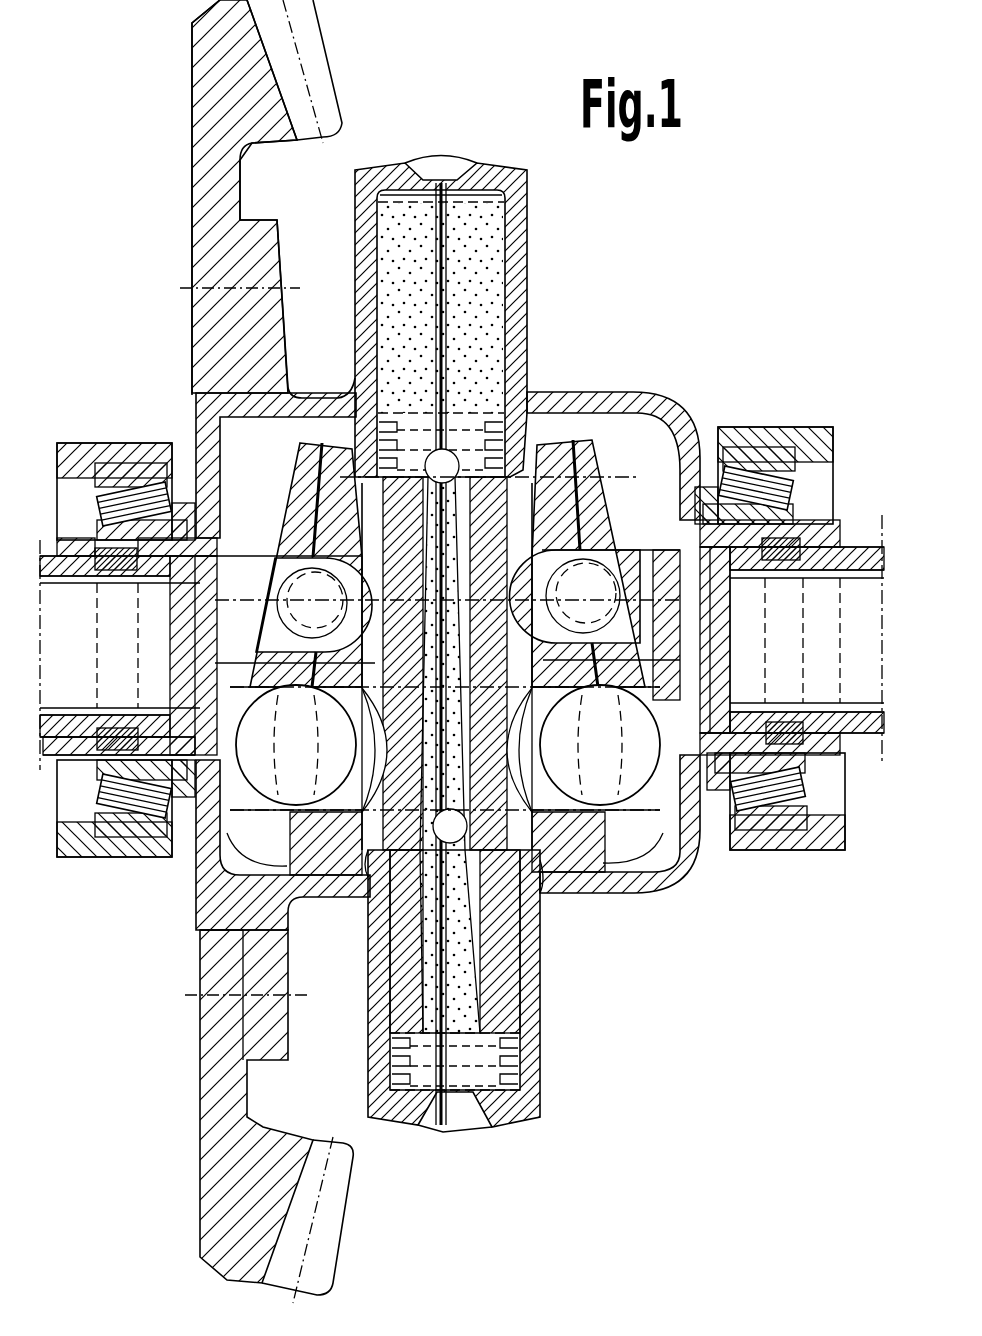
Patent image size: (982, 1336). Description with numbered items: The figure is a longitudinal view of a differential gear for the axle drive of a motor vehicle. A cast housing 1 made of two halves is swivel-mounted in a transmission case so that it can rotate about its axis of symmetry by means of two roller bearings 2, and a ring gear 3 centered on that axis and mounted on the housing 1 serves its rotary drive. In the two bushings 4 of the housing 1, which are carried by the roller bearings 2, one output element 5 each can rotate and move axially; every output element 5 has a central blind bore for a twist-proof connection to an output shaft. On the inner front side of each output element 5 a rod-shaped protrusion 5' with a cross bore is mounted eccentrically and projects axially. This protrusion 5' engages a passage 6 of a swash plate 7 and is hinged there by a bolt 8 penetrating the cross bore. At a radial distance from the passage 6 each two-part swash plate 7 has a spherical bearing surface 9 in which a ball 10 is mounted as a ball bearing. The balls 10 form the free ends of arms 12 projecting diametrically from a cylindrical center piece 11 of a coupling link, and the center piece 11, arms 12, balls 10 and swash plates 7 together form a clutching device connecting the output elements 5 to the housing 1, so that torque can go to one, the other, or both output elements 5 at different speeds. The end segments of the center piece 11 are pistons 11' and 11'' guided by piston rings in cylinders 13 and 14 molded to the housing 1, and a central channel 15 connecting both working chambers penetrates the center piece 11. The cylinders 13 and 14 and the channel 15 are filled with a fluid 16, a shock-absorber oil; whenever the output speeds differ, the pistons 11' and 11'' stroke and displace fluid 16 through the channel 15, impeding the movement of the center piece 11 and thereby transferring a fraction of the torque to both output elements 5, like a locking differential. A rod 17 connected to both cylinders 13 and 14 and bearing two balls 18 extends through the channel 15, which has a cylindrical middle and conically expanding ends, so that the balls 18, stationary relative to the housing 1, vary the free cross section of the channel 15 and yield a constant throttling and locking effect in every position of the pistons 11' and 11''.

The housing 1 is at (665, 403).
The roller bearings 2 is at (118, 470).
The ring gear 3 is at (225, 82).
The bushings 4 is at (70, 553).
The output element 5 is at (466, 711).
The rod-shaped protrusion 5' is at (409, 645).
The passage 6 is at (283, 543).
The swash plate 7 is at (253, 833).
The bolt 8 is at (298, 641).
The spherical bearing surface 9 is at (370, 873).
The ball 10 is at (292, 775).
The cylindrical center piece 11 is at (566, 666).
The piston 11' is at (501, 1055).
The piston 11'' is at (502, 395).
The arm 12 is at (362, 775).
The cylinder 13 is at (530, 1013).
The cylinder 14 is at (515, 292).
The central channel 15 is at (465, 500).
The fluid 16 is at (478, 263).
The rod 17 is at (440, 335).
The balls 18 is at (438, 455).